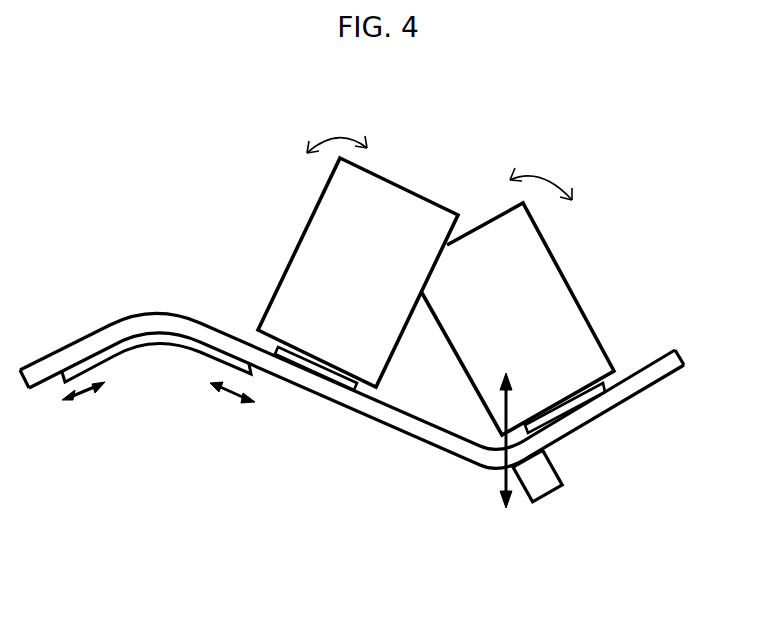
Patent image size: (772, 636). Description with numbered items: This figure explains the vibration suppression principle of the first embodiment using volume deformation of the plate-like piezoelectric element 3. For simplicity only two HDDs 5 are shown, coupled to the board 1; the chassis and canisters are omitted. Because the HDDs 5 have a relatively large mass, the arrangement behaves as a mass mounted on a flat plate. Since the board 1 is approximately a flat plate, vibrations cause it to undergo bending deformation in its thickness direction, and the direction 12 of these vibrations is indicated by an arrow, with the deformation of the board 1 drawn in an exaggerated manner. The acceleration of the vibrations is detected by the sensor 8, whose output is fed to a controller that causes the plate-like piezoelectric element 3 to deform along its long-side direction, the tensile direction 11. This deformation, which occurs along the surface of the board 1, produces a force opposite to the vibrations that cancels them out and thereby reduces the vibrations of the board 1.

The board 1 is at (462, 463).
The plate-like piezoelectric element 3 is at (143, 342).
The HDD 5 is at (497, 243).
The sensor 8 is at (520, 493).
The tensile direction 11 is at (227, 398).
The direction of the vibrations 12 is at (504, 479).